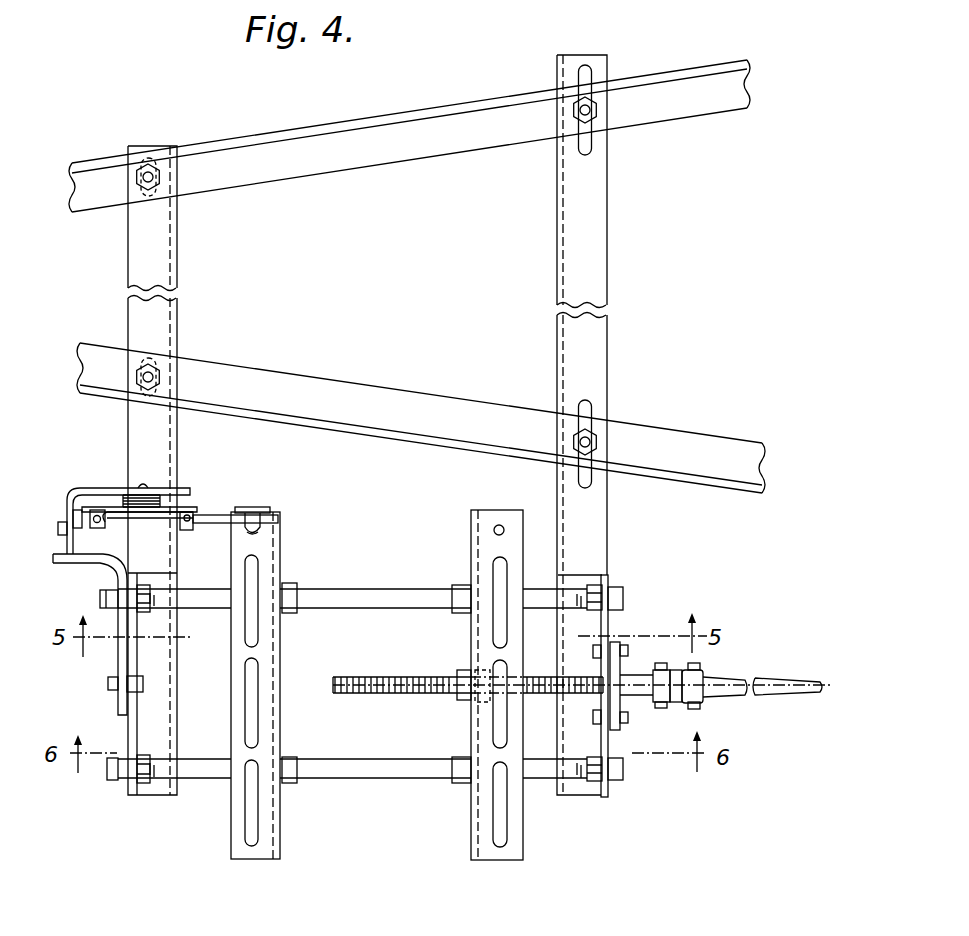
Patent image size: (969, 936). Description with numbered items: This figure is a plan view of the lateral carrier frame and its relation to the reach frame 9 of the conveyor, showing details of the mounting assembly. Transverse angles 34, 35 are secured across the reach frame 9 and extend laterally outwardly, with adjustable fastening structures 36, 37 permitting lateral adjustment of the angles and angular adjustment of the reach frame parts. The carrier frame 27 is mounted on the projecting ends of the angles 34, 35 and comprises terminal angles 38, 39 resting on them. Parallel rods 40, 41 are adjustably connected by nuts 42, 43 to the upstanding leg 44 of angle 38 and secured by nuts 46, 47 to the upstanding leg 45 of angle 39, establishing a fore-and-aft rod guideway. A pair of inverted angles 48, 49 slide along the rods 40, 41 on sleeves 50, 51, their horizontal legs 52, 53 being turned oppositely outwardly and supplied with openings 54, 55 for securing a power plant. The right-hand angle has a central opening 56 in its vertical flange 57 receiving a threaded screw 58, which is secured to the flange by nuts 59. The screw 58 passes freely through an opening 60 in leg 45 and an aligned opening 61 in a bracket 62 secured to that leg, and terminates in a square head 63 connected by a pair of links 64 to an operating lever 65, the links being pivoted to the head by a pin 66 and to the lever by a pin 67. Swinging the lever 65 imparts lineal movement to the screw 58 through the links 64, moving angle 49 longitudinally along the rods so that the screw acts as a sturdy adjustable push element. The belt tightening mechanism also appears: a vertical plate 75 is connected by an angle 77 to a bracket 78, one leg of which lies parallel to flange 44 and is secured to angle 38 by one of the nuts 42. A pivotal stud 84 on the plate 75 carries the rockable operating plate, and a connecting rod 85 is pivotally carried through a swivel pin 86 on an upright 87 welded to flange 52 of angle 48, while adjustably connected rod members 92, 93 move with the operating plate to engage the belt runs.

The reach frame 9 is at (403, 105).
The carrier frame 27 is at (213, 841).
The transverse angle 34 is at (165, 250).
The transverse angle 35 is at (595, 190).
The adjustable fastening structure 36 is at (155, 170).
The adjustable fastening structure 37 is at (578, 104).
The terminal angle 38 is at (157, 797).
The terminal angle 39 is at (593, 797).
The rod 40 is at (378, 592).
The rod 41 is at (345, 782).
The nut 42 is at (135, 597).
The nut 43 is at (145, 783).
The upstanding leg 44 is at (137, 730).
The upstanding leg 45 is at (604, 625).
The nut 46 is at (615, 595).
The nut 47 is at (615, 778).
The inverted angle 48 is at (288, 843).
The inverted angle 49 is at (530, 834).
The sleeve 50 is at (295, 588).
The sleeve 51 is at (460, 588).
The horizontal leg 52 is at (248, 860).
The horizontal leg 53 is at (508, 860).
The opening 54 is at (255, 767).
The opening 55 is at (497, 770).
The central opening 56 is at (477, 675).
The vertical flange 57 is at (478, 832).
The threaded screw 58 is at (365, 676).
The nut 59 is at (470, 697).
The opening 60 is at (610, 678).
The opening 61 is at (612, 698).
The bracket 62 is at (660, 705).
The square head 63 is at (675, 703).
The link 64 is at (695, 664).
The operating lever 65 is at (790, 685).
The pin 66 is at (663, 708).
The pin 67 is at (697, 672).
The vertical plate 75 is at (113, 490).
The angle 77 is at (66, 500).
The bracket 78 is at (118, 662).
The pivotal stud 84 is at (138, 515).
The connecting rod 85 is at (222, 515).
The swivel pin 86 is at (262, 533).
The upright 87 is at (265, 508).
The rod member 92 is at (100, 526).
The rod member 93 is at (190, 530).